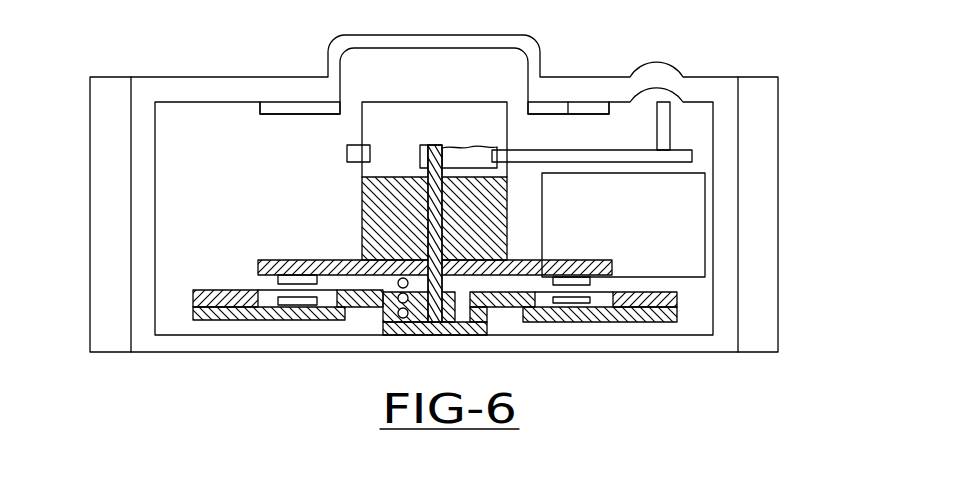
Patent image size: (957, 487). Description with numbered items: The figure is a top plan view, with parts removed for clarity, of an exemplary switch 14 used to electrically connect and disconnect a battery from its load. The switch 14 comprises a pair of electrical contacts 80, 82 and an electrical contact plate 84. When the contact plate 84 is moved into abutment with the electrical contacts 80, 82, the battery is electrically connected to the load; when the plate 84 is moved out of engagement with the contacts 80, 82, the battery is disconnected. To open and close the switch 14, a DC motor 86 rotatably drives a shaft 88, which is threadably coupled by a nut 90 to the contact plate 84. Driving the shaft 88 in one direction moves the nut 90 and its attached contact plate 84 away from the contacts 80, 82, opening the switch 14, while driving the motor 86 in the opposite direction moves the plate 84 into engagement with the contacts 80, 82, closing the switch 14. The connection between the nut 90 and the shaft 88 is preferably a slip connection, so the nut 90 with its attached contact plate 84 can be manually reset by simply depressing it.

The switch 14 is at (90, 126).
The electrical contact 80 is at (300, 302).
The electrical contact 82 is at (573, 302).
The electrical contact plate 84 is at (313, 260).
The DC motor 86 is at (695, 212).
The shaft 88 is at (427, 218).
The nut 90 is at (372, 203).